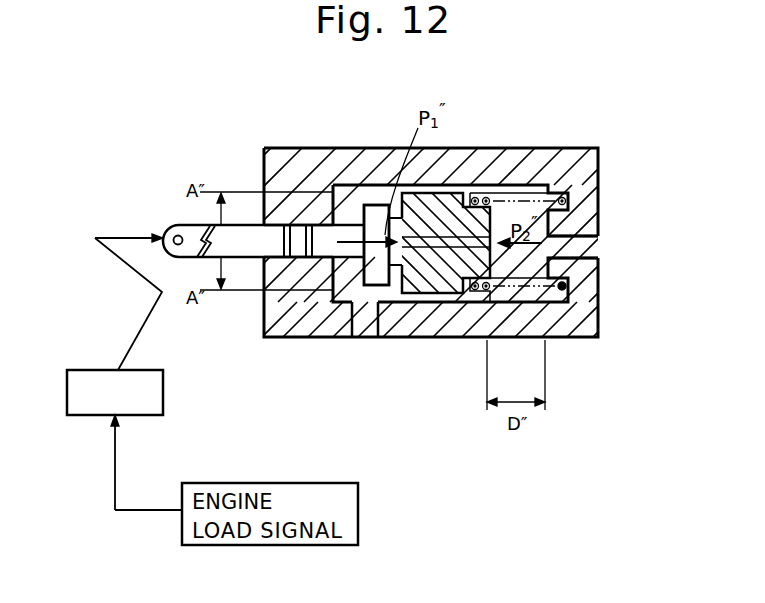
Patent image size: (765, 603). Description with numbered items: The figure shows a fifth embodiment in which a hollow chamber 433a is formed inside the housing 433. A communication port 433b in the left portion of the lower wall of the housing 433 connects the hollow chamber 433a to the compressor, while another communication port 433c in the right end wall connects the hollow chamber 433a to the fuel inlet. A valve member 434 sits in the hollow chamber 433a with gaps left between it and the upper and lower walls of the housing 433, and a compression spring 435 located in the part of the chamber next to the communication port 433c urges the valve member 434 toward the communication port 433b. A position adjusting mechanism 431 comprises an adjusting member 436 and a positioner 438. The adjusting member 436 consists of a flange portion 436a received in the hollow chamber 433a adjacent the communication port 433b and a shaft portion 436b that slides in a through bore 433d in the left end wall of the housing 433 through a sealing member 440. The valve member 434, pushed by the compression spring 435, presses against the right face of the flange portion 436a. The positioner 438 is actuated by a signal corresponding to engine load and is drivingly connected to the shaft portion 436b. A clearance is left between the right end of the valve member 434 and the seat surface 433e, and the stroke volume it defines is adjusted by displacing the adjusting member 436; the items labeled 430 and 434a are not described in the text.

The housing 430 is at (604, 153).
The position adjusting mechanism 431 is at (133, 222).
The housing 433 is at (462, 146).
The hollow chamber 433a is at (530, 302).
The communication port 433b is at (355, 338).
The communication port 433c is at (598, 247).
The through bore 433d is at (262, 250).
The seat surface 433e is at (550, 198).
The valve member 434 is at (409, 306).
The piston passage 434a is at (443, 245).
The compression spring 435 is at (566, 292).
The adjusting member 436 is at (390, 108).
The flange portion 436a is at (380, 228).
The shaft portion 436b is at (322, 228).
The positioner 438 is at (93, 370).
The sealing member 440 is at (265, 230).